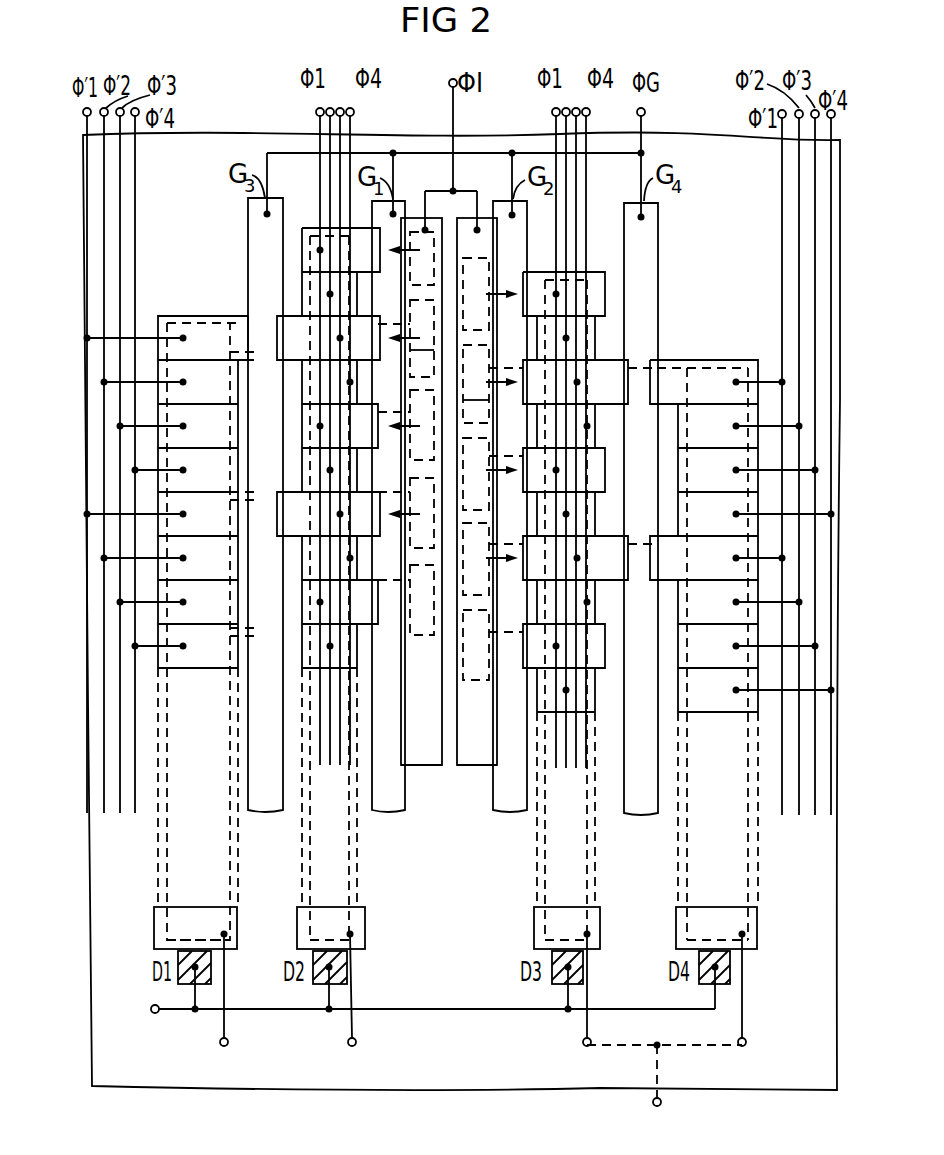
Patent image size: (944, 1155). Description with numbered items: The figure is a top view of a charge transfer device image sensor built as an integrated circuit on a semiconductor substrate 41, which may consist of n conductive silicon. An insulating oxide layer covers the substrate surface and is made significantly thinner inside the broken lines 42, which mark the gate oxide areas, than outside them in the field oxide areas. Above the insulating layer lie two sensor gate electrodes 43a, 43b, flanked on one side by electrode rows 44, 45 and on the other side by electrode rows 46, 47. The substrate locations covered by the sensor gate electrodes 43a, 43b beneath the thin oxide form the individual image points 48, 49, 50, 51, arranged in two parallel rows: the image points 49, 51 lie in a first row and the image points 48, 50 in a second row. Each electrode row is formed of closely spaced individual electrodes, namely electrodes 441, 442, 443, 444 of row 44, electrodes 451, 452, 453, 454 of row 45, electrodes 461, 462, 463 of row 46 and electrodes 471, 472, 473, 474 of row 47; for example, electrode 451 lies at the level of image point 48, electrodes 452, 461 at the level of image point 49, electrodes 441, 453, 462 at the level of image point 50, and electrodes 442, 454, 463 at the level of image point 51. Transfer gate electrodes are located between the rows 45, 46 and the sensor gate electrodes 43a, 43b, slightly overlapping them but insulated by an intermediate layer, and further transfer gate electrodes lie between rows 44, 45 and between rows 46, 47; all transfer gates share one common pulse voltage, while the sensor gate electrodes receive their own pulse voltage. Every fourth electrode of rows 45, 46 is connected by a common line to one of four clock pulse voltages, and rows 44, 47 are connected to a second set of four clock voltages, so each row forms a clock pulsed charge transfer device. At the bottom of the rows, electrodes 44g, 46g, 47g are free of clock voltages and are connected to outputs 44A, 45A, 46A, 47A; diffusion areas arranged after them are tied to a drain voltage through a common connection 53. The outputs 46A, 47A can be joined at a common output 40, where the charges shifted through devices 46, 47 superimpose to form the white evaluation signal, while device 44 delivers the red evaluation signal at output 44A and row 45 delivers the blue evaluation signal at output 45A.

The common output 40 is at (664, 1080).
The semiconductor substrate 41 is at (770, 1066).
The broken lines 42 is at (632, 403).
The sensor gate electrode 43a is at (420, 765).
The sensor gate electrode 43b is at (475, 765).
The electrode row 44 is at (158, 853).
The electrode 441 is at (203, 343).
The electrode 442 is at (165, 380).
The electrode 443 is at (173, 425).
The electrode 444 is at (180, 468).
The output-side electrode 44g is at (178, 922).
The output 44A is at (226, 1007).
The electrode row 45 is at (302, 853).
The electrode 451 is at (306, 226).
The electrode 452 is at (305, 283).
The electrode 453 is at (305, 330).
The electrode 454 is at (268, 362).
The output 45A is at (355, 1007).
The electrode row 46 is at (537, 853).
The electrode 461 is at (597, 330).
The electrode 462 is at (605, 332).
The electrode 463 is at (614, 374).
The output-side electrode 46g is at (318, 922).
The output 46A is at (595, 1007).
The electrode row 47 is at (678, 853).
The transfer electrode 471 is at (690, 375).
The transfer electrode 472 is at (716, 422).
The transfer electrode 473 is at (754, 473).
The transfer electrode 474 is at (762, 515).
The output-side electrode 47g is at (705, 922).
The output 47A is at (724, 1007).
The image point 48 is at (420, 223).
The image point 49 is at (481, 224).
The image point 50 is at (413, 352).
The image point 51 is at (490, 396).
The common connection 53 is at (152, 1005).